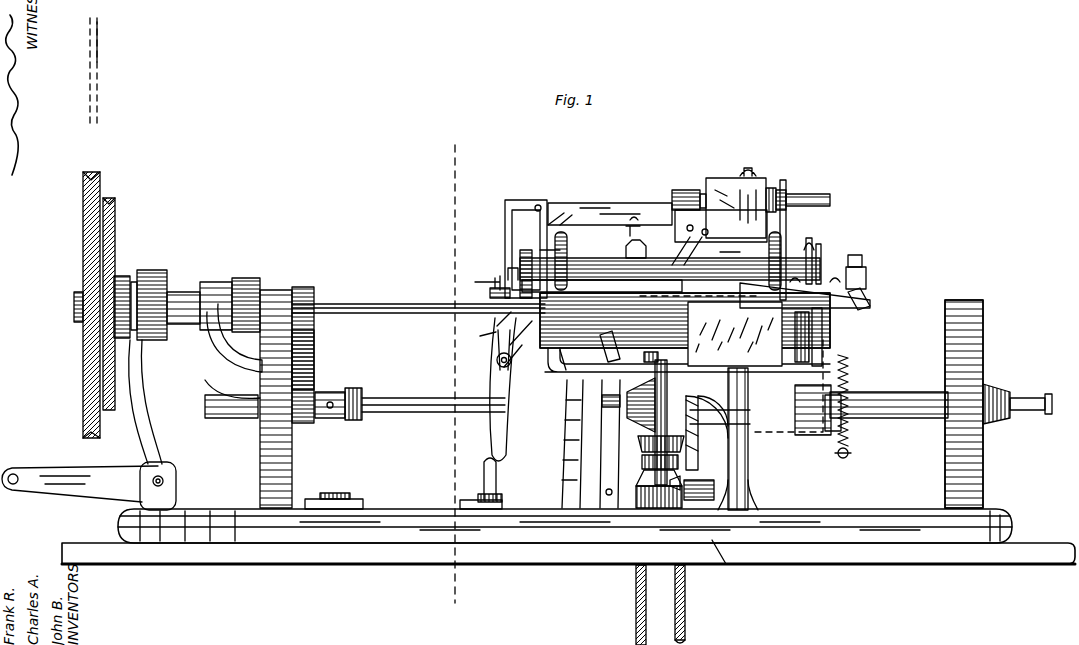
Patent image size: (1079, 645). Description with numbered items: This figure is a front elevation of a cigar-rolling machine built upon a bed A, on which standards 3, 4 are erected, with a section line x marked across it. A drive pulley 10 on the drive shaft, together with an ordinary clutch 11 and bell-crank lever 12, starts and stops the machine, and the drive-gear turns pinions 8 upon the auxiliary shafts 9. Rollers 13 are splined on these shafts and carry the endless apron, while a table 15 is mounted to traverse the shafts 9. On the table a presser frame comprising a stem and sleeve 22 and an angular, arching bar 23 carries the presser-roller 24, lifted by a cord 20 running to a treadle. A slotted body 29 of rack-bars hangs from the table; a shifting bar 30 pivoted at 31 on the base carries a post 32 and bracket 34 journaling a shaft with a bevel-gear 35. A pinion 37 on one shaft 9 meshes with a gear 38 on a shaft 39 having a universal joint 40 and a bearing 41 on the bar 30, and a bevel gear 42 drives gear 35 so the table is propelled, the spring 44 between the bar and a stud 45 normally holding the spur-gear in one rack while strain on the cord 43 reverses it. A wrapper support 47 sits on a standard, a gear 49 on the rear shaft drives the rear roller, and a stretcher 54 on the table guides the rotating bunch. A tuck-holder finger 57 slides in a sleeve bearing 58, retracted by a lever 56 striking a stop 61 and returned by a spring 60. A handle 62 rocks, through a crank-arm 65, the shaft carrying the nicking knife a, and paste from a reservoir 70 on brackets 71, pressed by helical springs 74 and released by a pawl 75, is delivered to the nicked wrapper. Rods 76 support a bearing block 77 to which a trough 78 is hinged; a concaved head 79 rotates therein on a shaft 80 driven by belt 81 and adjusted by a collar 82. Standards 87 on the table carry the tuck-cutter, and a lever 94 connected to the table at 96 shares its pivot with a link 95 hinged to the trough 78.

The standard 3 is at (276, 399).
The standard 4 is at (964, 404).
The pinion 8 is at (230, 295).
The auxiliary shaft 9 is at (418, 299).
The drive pulley 10 is at (100, 304).
The clutch 11 is at (138, 270).
The bell-crank lever 12 is at (80, 484).
The roller 13 is at (685, 320).
The table 15 is at (875, 300).
The cord 20 is at (689, 604).
The stem and sleeve 22 is at (636, 248).
The angular and arching bar 23 is at (570, 258).
The presser-roller 24 is at (670, 271).
The longitudinally slotted body 29 is at (687, 352).
The shifting bar 30 is at (502, 497).
The pivot 31 is at (334, 492).
The post 32 is at (660, 472).
The bracket 34 is at (707, 433).
The bevel-gear 35 is at (744, 450).
The pinion 37 is at (324, 284).
The gear 38 is at (315, 360).
The shaft 39 is at (408, 396).
The universal joint 40 is at (338, 396).
The bearing 41 is at (574, 460).
The bevel gear 42 is at (564, 428).
The cord 43 is at (626, 605).
The spring 44 is at (724, 561).
The stud 45 is at (746, 482).
The feed table or wrapper support 47 is at (735, 334).
The gear 49 is at (805, 337).
The stretcher 54 is at (486, 327).
The lever 56 is at (510, 394).
The finger or tuck-holder 57 is at (486, 280).
The sleeve bearing 58 is at (504, 262).
The spring 60 is at (518, 355).
The stop 61 is at (474, 468).
The handle 62 is at (830, 263).
The crank-arm 65 is at (816, 248).
The paste reservoir 70 is at (889, 405).
The bracket 71 is at (813, 410).
The helical spring 74 is at (781, 413).
The pawl 75 is at (1014, 394).
The rod 76 is at (687, 251).
The bearing block 77 is at (721, 210).
The trough 78 is at (610, 213).
The concaved head 79 is at (687, 191).
The shaft 80 is at (808, 190).
The belt 81 is at (778, 189).
The collar 82 is at (786, 190).
The standard 87 is at (520, 242).
The lever 94 is at (634, 430).
The link 95 is at (564, 204).
The connection point 96 is at (656, 349).
The nicking knife a is at (815, 272).
The bed A is at (565, 518).
The section line x is at (460, 370).